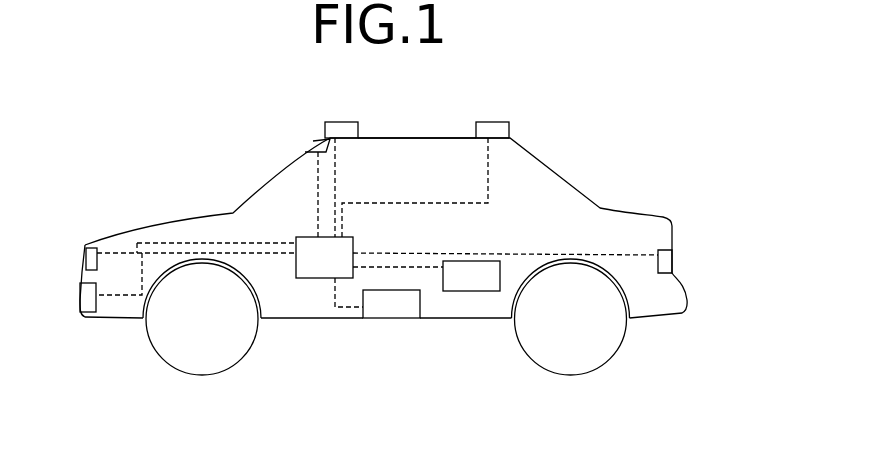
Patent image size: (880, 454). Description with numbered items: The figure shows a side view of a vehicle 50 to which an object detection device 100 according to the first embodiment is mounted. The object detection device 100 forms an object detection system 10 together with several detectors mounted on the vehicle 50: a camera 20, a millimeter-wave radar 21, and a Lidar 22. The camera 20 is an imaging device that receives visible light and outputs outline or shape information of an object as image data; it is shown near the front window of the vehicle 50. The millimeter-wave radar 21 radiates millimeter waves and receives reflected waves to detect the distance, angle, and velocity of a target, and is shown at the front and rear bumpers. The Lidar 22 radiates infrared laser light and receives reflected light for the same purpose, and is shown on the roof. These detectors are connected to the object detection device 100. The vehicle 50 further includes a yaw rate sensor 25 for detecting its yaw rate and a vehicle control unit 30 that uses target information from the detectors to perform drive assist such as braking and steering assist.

The object detection system 10 is at (247, 175).
The camera 20 is at (318, 147).
The millimeter-wave radar 21 is at (90, 262).
The Lidar 22 is at (338, 121).
The yaw rate sensor 25 is at (377, 298).
The vehicle control unit 30 is at (426, 276).
The vehicle 50 is at (407, 138).
The object detection device 100 is at (324, 257).